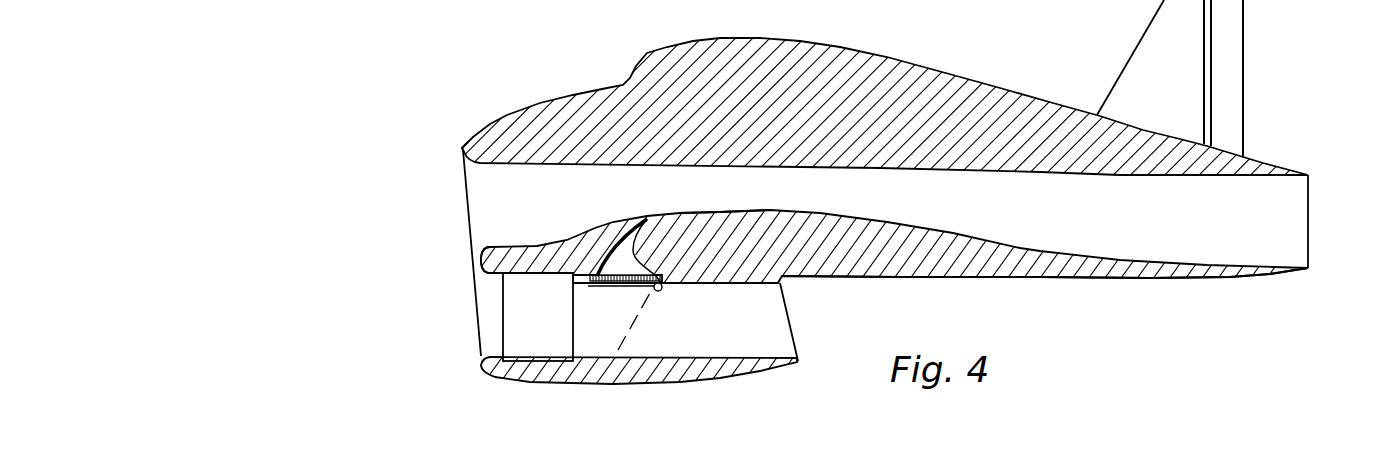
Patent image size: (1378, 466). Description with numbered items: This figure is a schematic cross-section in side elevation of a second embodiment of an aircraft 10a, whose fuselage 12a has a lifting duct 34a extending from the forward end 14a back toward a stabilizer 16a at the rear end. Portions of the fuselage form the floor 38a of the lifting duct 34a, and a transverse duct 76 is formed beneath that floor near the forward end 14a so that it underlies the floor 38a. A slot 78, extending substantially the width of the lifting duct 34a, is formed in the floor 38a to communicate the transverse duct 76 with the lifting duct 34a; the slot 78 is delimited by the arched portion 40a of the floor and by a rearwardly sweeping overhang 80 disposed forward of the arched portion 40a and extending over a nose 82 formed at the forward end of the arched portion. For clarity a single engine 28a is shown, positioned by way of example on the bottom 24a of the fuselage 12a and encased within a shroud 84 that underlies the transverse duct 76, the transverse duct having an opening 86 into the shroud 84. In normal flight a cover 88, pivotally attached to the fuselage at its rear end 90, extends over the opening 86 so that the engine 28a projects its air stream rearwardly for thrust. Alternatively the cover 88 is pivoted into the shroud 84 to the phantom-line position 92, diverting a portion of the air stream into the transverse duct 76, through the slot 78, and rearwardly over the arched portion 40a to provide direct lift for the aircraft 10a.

The aircraft 10a is at (885, 134).
The fuselage 12a is at (818, 58).
The forward end 14a is at (459, 147).
The stabilizer 16a is at (1318, 173).
The bottom 24a is at (960, 278).
The engine 28a is at (520, 330).
The lifting duct 34a is at (490, 192).
The floor 38a is at (533, 243).
The arched portion 40a is at (867, 215).
The transverse duct 76 is at (624, 252).
The slot 78 is at (653, 217).
The rearwardly sweeping overhang 80 is at (603, 242).
The nose 82 is at (720, 212).
The shroud 84 is at (650, 382).
The opening 86 is at (620, 283).
The cover 88 is at (632, 290).
The rear end 90 is at (663, 290).
The pivoted cover position 92 is at (640, 322).